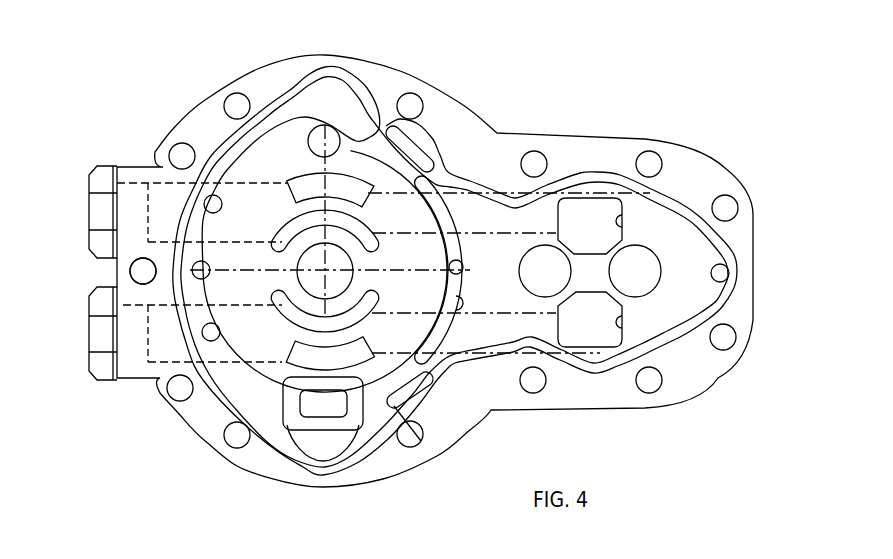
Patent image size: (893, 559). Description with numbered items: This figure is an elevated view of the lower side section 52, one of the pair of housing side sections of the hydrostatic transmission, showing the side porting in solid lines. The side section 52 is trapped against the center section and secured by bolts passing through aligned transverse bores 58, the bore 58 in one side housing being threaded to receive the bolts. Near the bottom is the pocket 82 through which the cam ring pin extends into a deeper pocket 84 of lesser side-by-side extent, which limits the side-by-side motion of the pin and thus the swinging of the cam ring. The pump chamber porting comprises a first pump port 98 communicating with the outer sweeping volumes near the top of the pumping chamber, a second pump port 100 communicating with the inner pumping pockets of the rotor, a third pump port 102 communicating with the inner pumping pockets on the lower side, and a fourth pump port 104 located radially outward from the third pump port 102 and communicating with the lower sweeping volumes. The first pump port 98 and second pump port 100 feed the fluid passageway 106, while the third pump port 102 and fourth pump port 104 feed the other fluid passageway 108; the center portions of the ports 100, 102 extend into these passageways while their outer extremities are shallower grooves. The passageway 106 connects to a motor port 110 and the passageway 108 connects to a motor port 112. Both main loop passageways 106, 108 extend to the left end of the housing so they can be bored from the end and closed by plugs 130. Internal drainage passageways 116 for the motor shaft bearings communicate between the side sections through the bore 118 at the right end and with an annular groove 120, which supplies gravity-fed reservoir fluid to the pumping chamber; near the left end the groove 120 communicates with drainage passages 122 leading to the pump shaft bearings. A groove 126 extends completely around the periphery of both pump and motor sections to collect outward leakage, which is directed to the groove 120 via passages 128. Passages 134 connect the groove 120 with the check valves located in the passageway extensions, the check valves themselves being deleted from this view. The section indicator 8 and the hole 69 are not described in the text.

The section line indicator 8 is at (137, 275).
The lower side section 52 is at (479, 116).
The transverse bores 58 is at (236, 100).
The locating pin hole 69 is at (331, 127).
The pocket 82 is at (350, 431).
The deeper pocket 84 is at (316, 412).
The first pump port 98 is at (310, 180).
The second pump port 100 is at (307, 220).
The third pump port 102 is at (279, 294).
The fourth pump port 104 is at (296, 362).
The fluid passageway 106 is at (504, 231).
The fluid passageway 108 is at (490, 343).
The motor port 110 is at (620, 222).
The motor port 112 is at (620, 322).
The internal drainage passageways 116 is at (463, 266).
The bore 118 is at (733, 273).
The annular groove 120 is at (460, 302).
The drainage passages 122 is at (209, 276).
The groove 126 is at (585, 176).
The passages 128 is at (422, 148).
The plugs 130 is at (103, 170).
The passages 134 is at (218, 212).